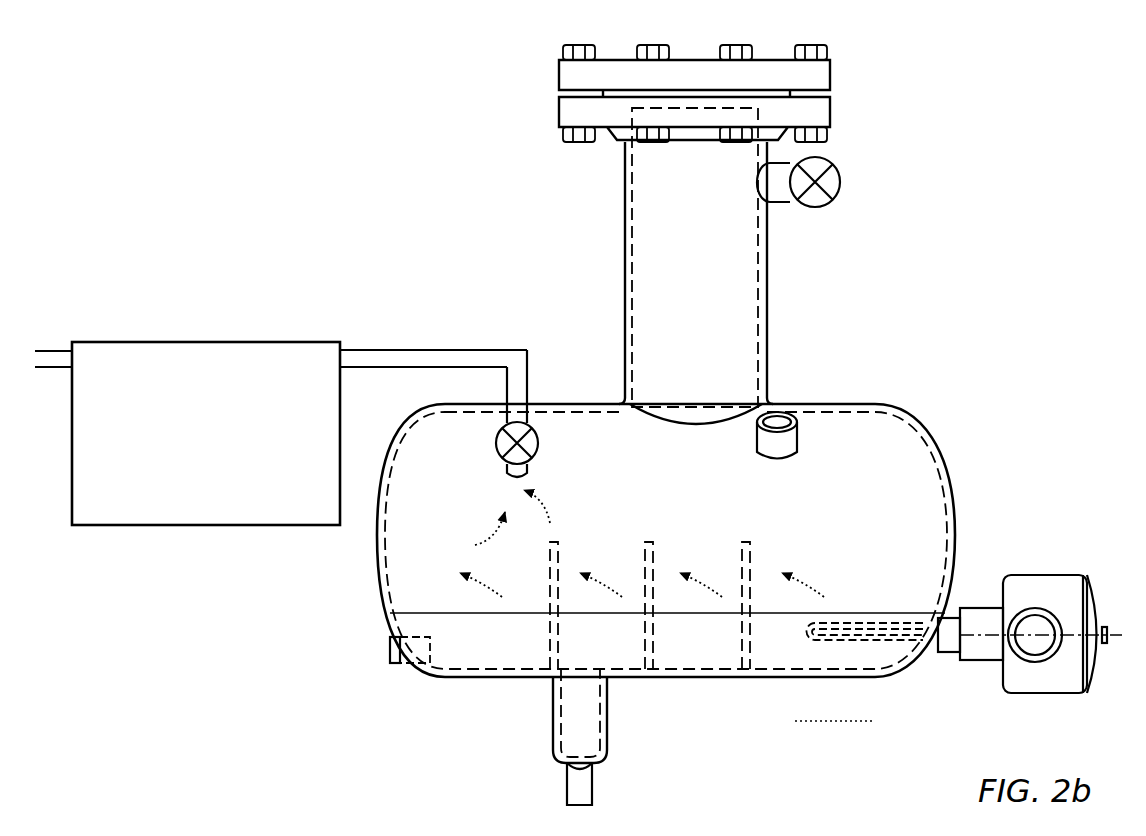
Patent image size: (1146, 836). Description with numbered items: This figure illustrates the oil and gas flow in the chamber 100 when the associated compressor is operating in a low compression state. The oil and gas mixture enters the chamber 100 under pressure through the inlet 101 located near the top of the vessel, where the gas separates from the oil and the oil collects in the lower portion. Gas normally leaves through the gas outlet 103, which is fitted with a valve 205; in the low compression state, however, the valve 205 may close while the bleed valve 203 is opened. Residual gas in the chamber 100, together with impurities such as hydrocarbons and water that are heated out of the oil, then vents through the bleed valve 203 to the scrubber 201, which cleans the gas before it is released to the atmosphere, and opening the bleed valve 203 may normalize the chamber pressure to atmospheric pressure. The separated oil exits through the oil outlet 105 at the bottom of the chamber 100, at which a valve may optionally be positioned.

The chamber 100 is at (408, 184).
The valve 205 is at (833, 165).
The gas outlet 103 is at (780, 197).
The inlet 101 is at (778, 417).
The bleed valve 203 is at (539, 446).
The scrubber 201 is at (281, 433).
The oil outlet 105 is at (400, 664).